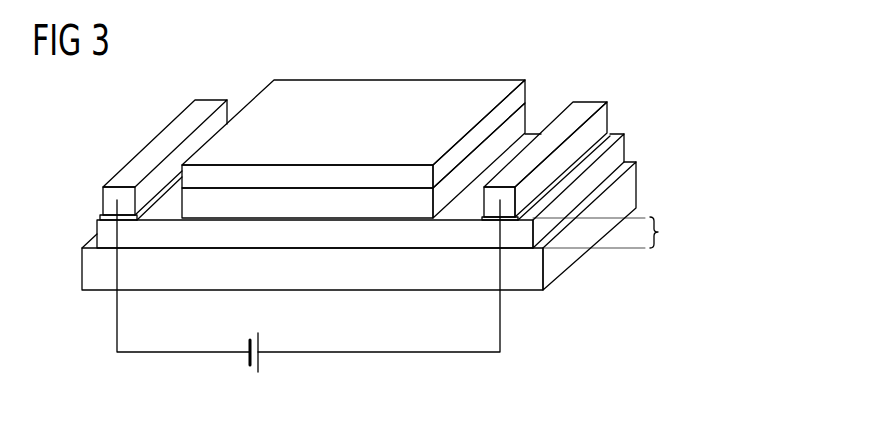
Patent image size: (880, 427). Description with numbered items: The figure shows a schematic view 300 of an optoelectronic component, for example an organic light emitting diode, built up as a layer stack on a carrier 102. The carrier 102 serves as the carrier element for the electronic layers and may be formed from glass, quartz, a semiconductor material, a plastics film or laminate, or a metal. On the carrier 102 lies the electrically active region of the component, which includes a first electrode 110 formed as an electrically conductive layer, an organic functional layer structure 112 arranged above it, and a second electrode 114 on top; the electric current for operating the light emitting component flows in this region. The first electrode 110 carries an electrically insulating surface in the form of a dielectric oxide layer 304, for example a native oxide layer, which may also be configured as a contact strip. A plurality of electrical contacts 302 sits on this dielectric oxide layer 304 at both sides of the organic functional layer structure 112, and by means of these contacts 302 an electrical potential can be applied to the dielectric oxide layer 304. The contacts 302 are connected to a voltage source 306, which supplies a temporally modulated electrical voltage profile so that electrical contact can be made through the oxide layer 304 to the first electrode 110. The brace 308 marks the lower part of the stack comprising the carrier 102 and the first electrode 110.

The view 300 is at (638, 67).
The carrier 102 is at (365, 278).
The first electrode 110 is at (105, 232).
The organic functional layer structure 112 is at (313, 205).
The second electrode 114 is at (515, 100).
The electrical contacts 302 is at (113, 197).
The dielectric oxide layer 304 is at (125, 220).
The voltage source 306 is at (260, 360).
The layer stack 308 is at (615, 233).